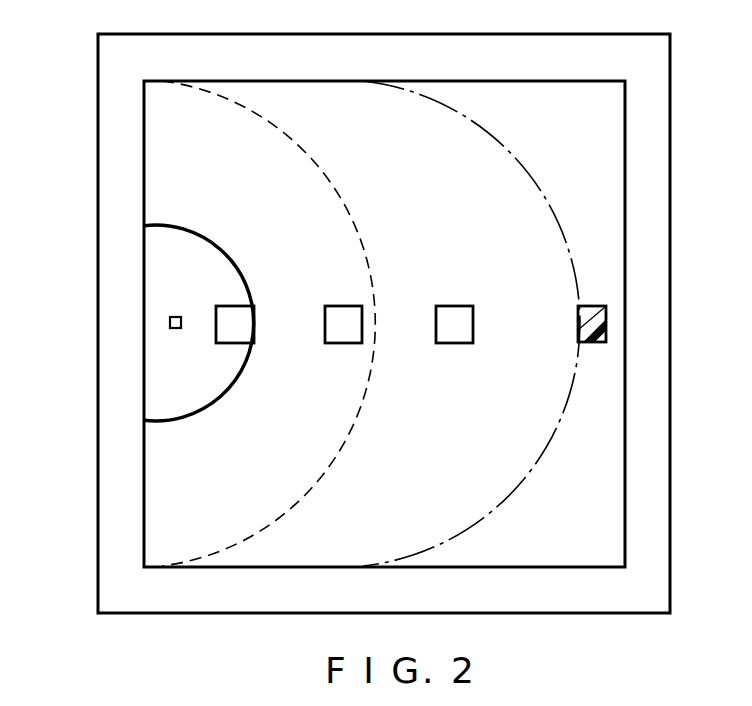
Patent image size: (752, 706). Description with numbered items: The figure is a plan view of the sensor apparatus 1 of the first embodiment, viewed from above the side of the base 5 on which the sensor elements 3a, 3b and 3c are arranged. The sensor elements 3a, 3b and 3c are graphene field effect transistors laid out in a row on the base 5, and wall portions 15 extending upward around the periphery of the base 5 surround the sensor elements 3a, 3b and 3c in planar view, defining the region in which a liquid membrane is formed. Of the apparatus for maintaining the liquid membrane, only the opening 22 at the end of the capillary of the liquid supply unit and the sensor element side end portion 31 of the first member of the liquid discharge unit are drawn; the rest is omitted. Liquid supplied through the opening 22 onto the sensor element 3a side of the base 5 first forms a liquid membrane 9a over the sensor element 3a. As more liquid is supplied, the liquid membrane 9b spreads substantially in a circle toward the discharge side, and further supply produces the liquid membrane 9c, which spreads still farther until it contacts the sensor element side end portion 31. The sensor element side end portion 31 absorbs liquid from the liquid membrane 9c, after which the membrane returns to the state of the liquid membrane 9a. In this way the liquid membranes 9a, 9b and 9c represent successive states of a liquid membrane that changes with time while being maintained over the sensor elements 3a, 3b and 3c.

The sensor apparatus 1 is at (72, 70).
The base 5 is at (670, 515).
The wall portions 15 is at (110, 254).
The opening 22 is at (150, 324).
The sensor element 3a is at (233, 344).
The sensor element 3b is at (344, 344).
The sensor element 3c is at (455, 344).
The liquid membrane 9a is at (187, 223).
The liquid membrane 9b is at (282, 136).
The liquid membrane 9c is at (468, 122).
The sensor element side end portion 31 is at (591, 305).